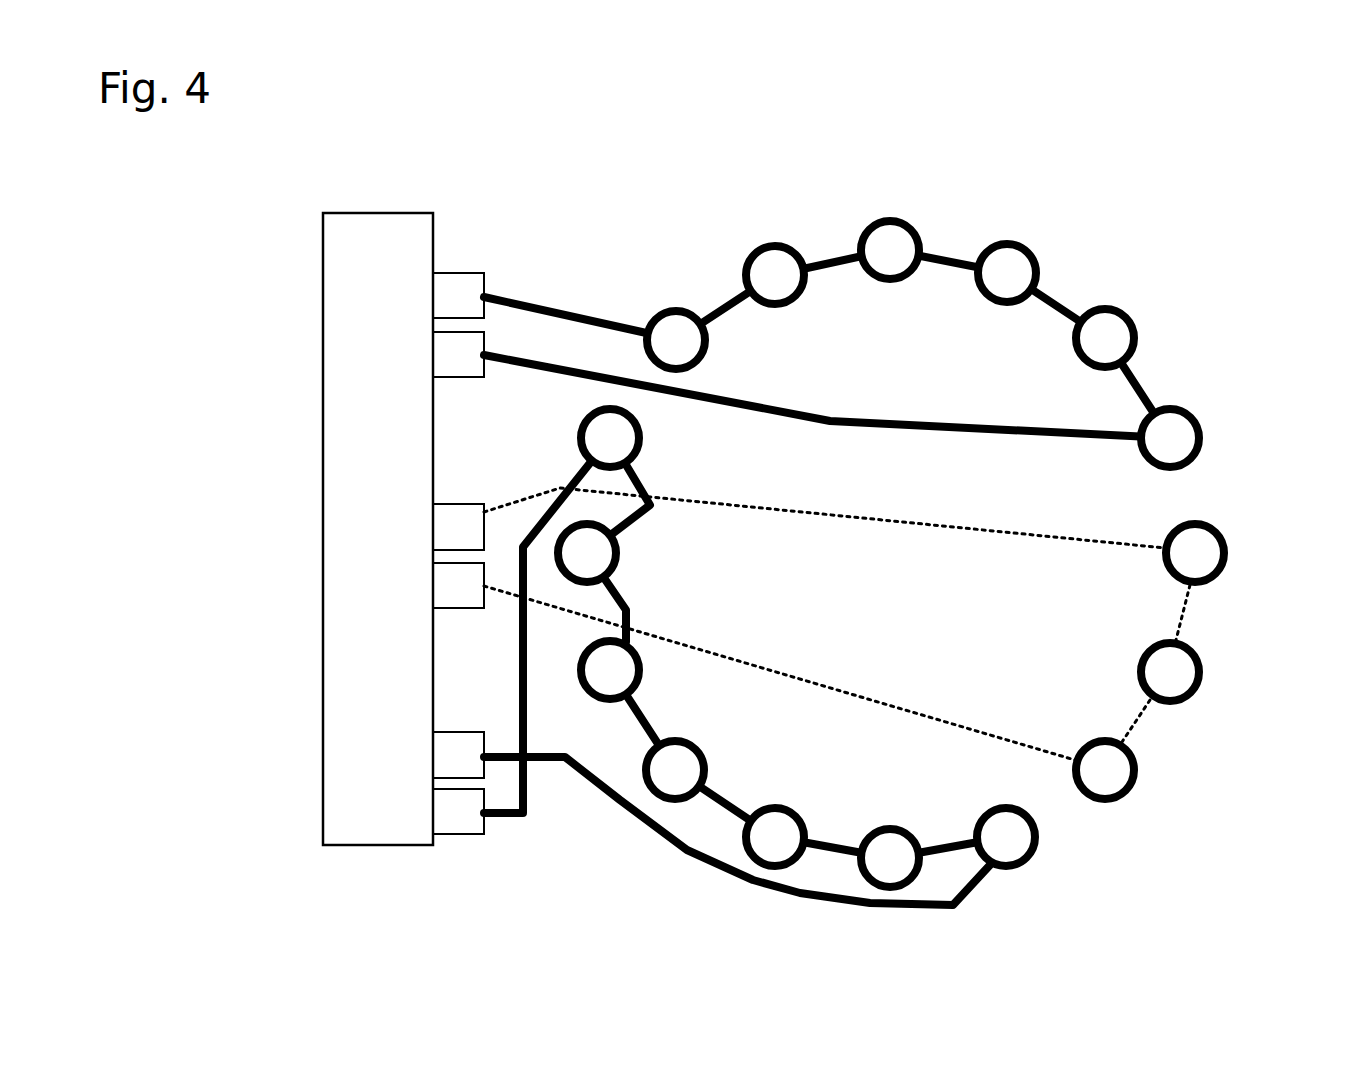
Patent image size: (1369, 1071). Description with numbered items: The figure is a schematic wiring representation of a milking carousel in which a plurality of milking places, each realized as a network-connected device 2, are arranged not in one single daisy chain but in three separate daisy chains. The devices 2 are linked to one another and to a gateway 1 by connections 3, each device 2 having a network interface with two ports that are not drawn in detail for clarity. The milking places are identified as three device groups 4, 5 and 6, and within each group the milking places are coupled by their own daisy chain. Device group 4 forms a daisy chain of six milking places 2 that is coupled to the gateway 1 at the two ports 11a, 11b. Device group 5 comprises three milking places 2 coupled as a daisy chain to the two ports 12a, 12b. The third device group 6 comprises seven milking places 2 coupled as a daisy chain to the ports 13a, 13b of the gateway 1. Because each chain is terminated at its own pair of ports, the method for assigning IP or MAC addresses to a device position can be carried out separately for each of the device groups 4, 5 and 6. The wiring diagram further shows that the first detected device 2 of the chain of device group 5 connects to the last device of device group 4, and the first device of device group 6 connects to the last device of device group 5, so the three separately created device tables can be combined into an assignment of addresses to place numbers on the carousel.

The gateway 1 is at (360, 212).
The device 2 is at (895, 551).
The connection 3 is at (895, 551).
The device group 4 is at (1045, 216).
The device group 5 is at (1210, 655).
The device group 6 is at (812, 908).
The port 11a is at (455, 273).
The port 11b is at (455, 378).
The port 12a is at (450, 505).
The port 12b is at (455, 610).
The port 13a is at (455, 732).
The port 13b is at (460, 836).